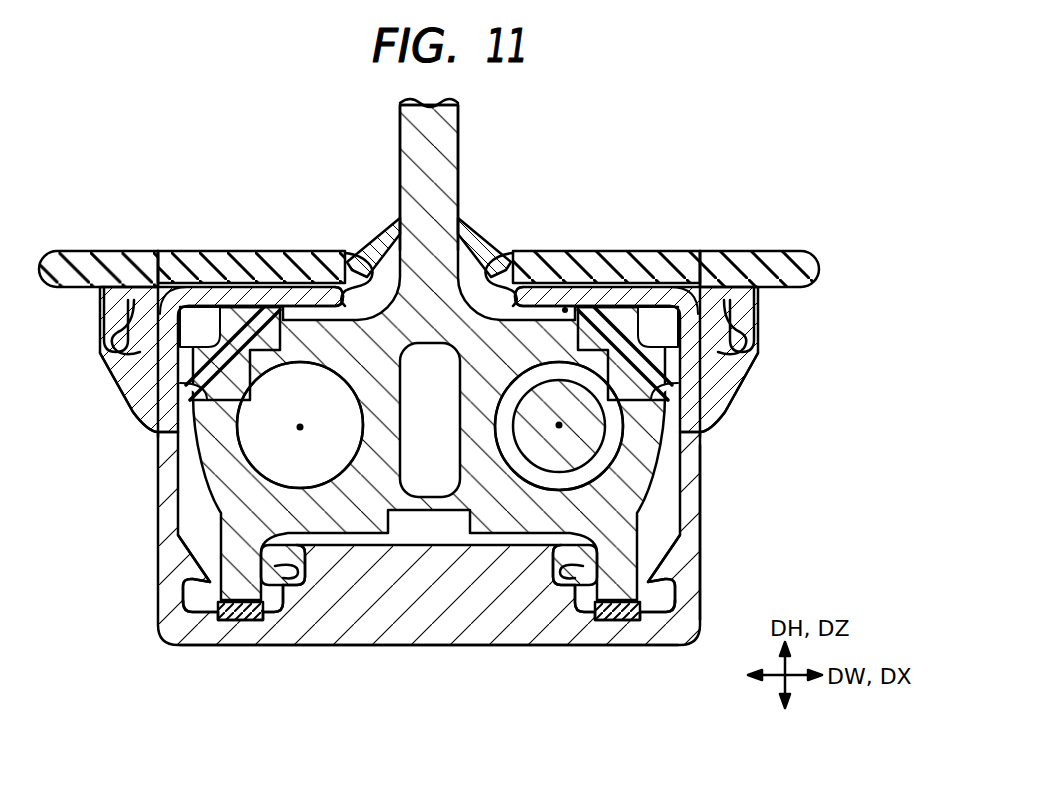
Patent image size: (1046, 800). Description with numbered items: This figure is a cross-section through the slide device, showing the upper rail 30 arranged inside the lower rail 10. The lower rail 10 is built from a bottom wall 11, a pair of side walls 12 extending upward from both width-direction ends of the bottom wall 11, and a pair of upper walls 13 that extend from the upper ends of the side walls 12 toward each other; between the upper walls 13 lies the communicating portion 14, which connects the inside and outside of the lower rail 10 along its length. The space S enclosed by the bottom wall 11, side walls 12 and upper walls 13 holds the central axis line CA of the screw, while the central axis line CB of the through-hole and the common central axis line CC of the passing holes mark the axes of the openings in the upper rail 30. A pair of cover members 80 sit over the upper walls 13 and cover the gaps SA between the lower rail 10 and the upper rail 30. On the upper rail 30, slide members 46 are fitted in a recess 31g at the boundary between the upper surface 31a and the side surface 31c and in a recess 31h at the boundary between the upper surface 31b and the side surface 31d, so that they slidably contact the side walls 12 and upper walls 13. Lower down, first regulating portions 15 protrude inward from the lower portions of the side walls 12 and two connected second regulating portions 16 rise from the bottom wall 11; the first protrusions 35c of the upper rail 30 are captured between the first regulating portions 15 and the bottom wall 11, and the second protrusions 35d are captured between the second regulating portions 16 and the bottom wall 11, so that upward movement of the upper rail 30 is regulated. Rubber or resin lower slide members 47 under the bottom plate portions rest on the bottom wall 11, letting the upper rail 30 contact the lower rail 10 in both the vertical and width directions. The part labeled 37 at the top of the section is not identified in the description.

The lower rail 10 is at (703, 553).
The bottom wall 11 is at (427, 647).
The side walls 12 is at (157, 513).
The upper walls 13 is at (210, 251).
The communicating portion 14 is at (340, 262).
The first regulating portions 15 is at (183, 572).
The second regulating portions 16 is at (280, 570).
The upper rail 30 is at (652, 489).
The upper surface of the body portion 31a is at (525, 312).
The upper surface of the body portion 31b is at (303, 300).
The side surface 31c is at (703, 437).
The side surface 31d is at (160, 433).
The recess 31g is at (718, 417).
The recess 31h is at (130, 418).
The first protrusions 35c is at (190, 608).
The second protrusions 35d is at (280, 612).
The shaft 37 is at (460, 137).
The slide members 46 is at (127, 345).
The lower slide members 47 is at (242, 620).
The cover members 80 is at (78, 250).
The space S is at (566, 309).
The gaps SA is at (362, 295).
The central axis line of the screw CA is at (559, 425).
The central axis line of the through-hole CB is at (301, 431).
The central axis line of the passing holes CC is at (559, 425).